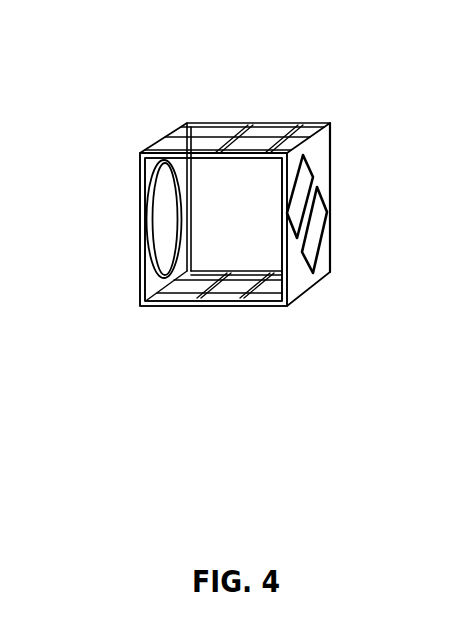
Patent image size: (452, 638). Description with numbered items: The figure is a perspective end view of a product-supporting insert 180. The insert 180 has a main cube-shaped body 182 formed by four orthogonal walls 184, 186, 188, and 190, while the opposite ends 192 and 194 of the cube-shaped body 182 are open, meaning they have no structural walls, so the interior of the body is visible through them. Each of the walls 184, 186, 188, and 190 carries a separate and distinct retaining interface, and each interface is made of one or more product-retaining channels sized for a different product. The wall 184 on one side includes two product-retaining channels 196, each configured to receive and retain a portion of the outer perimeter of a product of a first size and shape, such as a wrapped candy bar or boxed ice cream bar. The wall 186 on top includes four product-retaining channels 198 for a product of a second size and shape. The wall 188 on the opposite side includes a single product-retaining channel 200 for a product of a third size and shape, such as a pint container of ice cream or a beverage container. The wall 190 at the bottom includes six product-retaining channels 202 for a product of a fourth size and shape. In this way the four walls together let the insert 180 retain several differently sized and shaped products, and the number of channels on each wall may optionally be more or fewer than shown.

The product-supporting insert 180 is at (322, 70).
The main cube-shaped body 182 is at (333, 155).
The wall 184 is at (333, 250).
The wall 186 is at (260, 120).
The wall 188 is at (138, 263).
The wall 190 is at (247, 307).
The open end 192 is at (198, 250).
The open end 194 is at (245, 208).
The product-retaining channel 196 is at (312, 222).
The product-retaining channel 198 is at (283, 127).
The product-retaining channel 200 is at (168, 203).
The product-retaining channel 202 is at (188, 288).